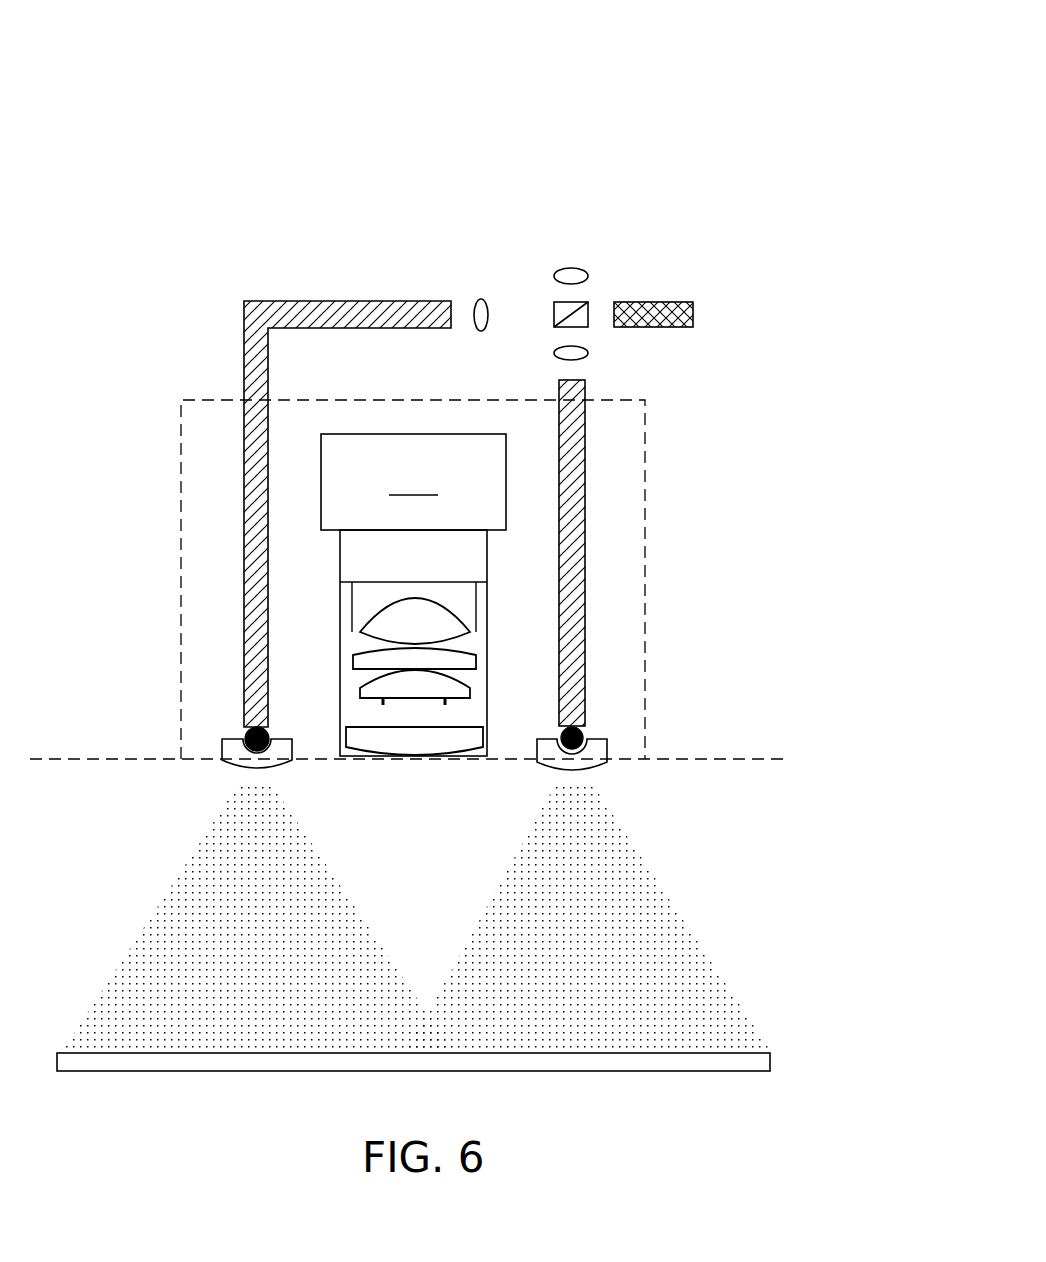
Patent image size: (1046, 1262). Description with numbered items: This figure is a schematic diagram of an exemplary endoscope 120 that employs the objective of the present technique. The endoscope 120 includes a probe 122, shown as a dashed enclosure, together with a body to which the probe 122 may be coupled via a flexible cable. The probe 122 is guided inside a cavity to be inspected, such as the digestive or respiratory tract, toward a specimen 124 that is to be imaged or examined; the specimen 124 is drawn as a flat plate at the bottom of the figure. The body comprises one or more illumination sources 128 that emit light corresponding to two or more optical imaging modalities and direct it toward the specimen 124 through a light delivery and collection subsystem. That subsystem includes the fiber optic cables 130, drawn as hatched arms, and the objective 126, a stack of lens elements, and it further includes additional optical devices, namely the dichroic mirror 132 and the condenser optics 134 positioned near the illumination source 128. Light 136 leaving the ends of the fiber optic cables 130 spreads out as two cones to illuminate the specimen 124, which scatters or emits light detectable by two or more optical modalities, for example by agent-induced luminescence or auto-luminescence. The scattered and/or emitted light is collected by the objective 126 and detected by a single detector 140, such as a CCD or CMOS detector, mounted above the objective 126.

The endoscope 120 is at (752, 79).
The probe 122 is at (656, 421).
The specimen 124 is at (770, 1060).
The objective 126 is at (487, 642).
The illumination source 128 is at (694, 312).
The fiber optic cables 130 is at (246, 660).
The dichroic mirror 132 is at (565, 300).
The condenser optics 134 is at (575, 272).
The light 136 is at (705, 967).
The detector 140 is at (413, 482).